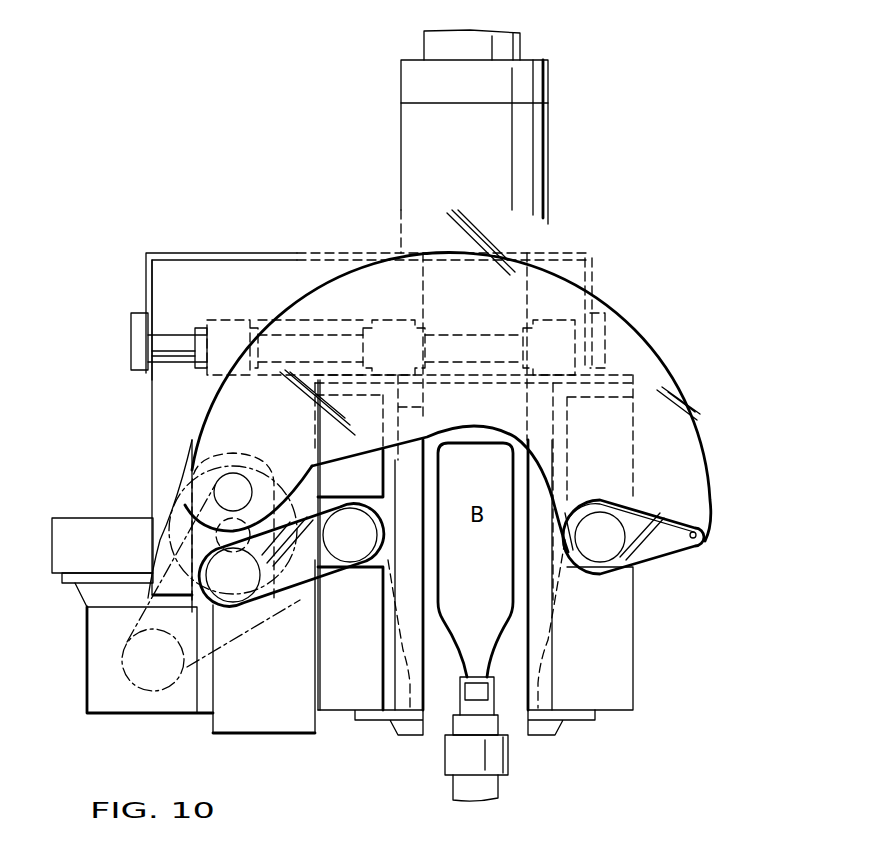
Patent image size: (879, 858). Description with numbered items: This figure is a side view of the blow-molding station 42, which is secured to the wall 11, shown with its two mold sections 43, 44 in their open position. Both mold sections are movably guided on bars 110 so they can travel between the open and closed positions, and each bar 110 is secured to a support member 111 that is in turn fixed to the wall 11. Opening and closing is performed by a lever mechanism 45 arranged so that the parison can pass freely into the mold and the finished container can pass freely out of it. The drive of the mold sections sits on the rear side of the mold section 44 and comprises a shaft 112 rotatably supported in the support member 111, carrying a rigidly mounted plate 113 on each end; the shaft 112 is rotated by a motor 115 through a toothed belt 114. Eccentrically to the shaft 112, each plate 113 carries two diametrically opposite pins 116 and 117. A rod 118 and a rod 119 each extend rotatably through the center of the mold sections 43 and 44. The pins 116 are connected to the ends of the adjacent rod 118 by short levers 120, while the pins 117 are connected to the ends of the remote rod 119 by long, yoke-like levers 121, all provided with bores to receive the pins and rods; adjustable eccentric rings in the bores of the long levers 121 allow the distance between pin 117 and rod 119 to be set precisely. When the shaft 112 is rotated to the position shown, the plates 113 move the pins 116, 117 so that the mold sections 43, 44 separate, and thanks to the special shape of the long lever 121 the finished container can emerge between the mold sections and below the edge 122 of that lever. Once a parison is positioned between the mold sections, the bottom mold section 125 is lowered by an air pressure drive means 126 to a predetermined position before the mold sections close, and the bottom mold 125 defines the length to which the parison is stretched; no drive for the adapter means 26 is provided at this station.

The air pressure drive means 126 is at (513, 44).
The bottom mold section 125 is at (503, 292).
The long lever 121 is at (668, 381).
The lever mechanism 45 is at (190, 411).
The bar 110 is at (562, 350).
The support member 111 is at (586, 271).
The edge 122 is at (541, 460).
The shaft 112 is at (195, 535).
The plate 113 is at (197, 473).
The pin 117 is at (228, 490).
The short lever 120 is at (300, 568).
The pin 116 is at (240, 582).
The rod 118 is at (332, 543).
The rod 119 is at (603, 543).
The toothed belt 114 is at (187, 693).
The motor 115 is at (112, 702).
The mold section 44 is at (337, 673).
The mold section 43 is at (612, 680).
The blow-molding station 42 is at (432, 740).
The adapter means 26 is at (512, 757).
The wall 11 is at (27, 487).